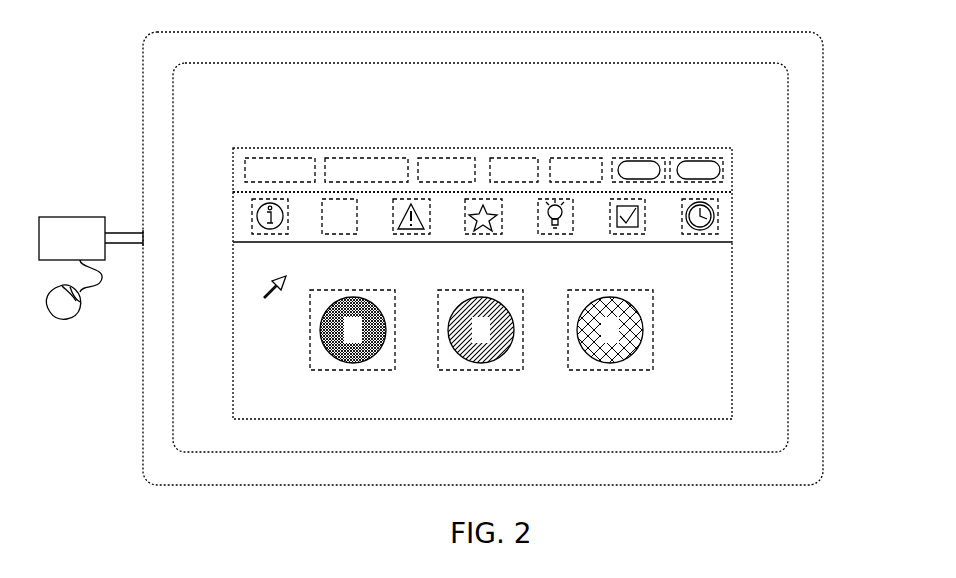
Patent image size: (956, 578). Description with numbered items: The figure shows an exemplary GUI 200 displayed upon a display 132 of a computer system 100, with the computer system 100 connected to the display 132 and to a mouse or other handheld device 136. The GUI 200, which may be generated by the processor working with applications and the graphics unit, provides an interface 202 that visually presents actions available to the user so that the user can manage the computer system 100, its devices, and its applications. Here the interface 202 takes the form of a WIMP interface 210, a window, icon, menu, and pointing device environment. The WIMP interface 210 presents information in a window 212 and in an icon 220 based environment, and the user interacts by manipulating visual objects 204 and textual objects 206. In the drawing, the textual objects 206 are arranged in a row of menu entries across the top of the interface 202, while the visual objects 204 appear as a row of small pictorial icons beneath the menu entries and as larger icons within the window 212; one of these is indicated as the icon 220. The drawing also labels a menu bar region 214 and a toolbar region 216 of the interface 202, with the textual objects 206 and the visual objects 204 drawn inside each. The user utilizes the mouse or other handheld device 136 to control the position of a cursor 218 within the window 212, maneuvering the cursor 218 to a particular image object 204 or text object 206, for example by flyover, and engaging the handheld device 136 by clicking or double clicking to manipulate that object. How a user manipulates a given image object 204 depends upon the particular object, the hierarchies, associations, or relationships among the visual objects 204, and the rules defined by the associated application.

The computer system 100 is at (91, 238).
The display 132 is at (252, 32).
The mouse or other handheld device 136 is at (64, 322).
The GUI 200 is at (480, 257).
The interface 202 is at (484, 244).
The visual objects 204 is at (484, 301).
The textual objects 206 is at (280, 158).
The WIMP interface 210 is at (282, 102).
The window 212 is at (482, 330).
The menu bar 214 is at (233, 170).
The toolbar 216 is at (233, 215).
The cursor 218 is at (262, 292).
The icon 220 is at (657, 315).